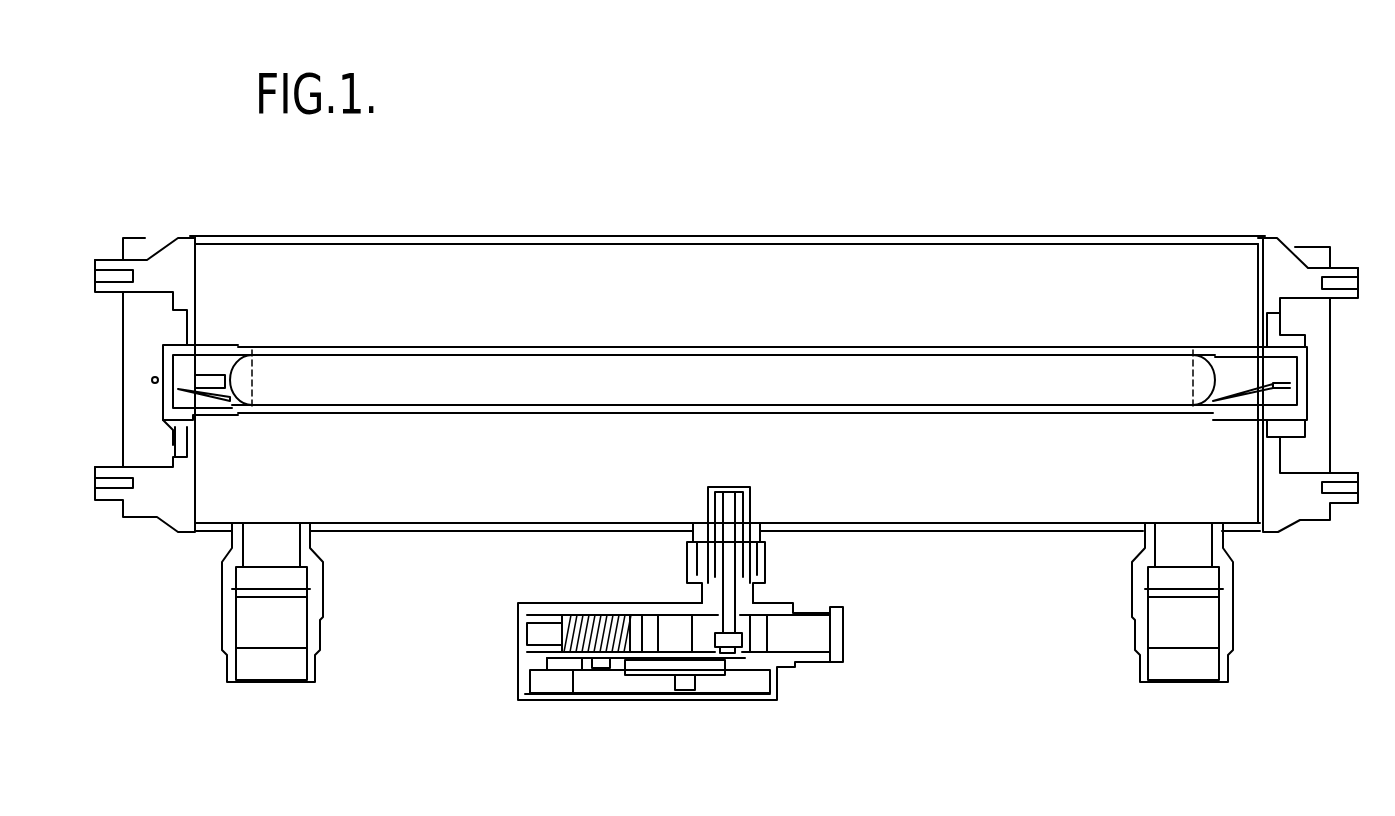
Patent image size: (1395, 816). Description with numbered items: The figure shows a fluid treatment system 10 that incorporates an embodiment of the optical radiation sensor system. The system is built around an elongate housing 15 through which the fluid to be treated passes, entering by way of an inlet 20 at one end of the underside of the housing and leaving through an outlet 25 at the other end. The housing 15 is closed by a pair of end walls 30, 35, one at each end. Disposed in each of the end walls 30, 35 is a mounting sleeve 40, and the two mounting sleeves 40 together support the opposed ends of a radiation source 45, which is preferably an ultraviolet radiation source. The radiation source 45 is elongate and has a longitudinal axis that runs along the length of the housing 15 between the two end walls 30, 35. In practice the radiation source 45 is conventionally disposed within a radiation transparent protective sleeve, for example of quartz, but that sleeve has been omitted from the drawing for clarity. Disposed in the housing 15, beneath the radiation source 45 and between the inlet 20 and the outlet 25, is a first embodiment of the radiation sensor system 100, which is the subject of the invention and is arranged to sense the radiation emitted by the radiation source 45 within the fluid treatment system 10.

The fluid treatment system 10 is at (998, 165).
The housing 15 is at (535, 234).
The inlet 20 is at (224, 625).
The outlet 25 is at (1229, 608).
The end wall 30 is at (176, 260).
The end wall 35 is at (1285, 262).
The mounting sleeve 40 is at (222, 345).
The radiation source 45 is at (790, 348).
The radiation sensor system 100 is at (883, 541).